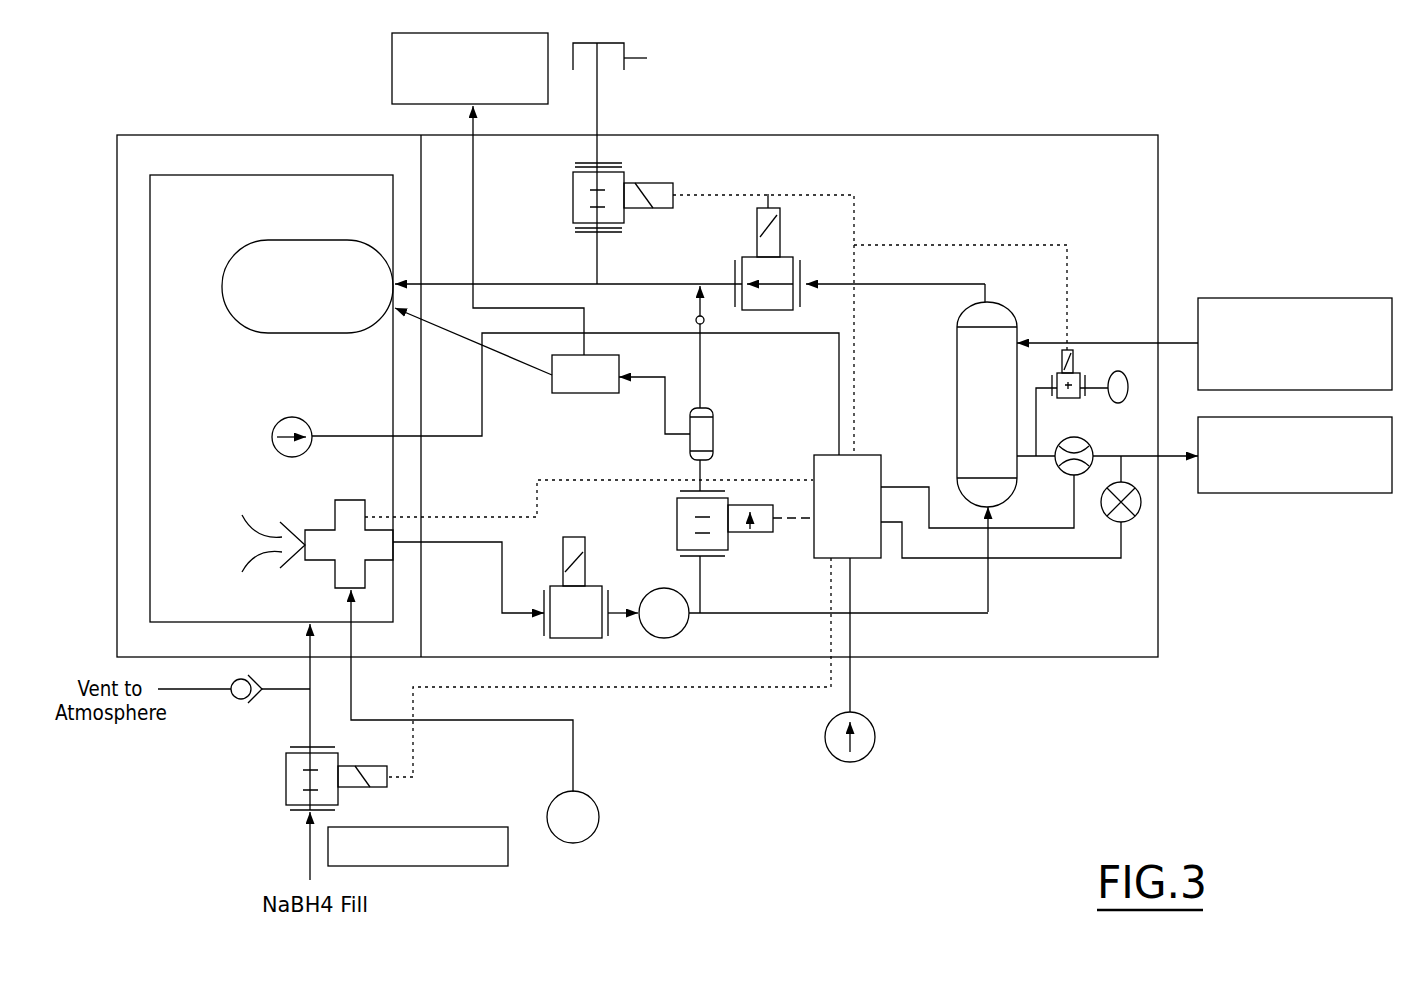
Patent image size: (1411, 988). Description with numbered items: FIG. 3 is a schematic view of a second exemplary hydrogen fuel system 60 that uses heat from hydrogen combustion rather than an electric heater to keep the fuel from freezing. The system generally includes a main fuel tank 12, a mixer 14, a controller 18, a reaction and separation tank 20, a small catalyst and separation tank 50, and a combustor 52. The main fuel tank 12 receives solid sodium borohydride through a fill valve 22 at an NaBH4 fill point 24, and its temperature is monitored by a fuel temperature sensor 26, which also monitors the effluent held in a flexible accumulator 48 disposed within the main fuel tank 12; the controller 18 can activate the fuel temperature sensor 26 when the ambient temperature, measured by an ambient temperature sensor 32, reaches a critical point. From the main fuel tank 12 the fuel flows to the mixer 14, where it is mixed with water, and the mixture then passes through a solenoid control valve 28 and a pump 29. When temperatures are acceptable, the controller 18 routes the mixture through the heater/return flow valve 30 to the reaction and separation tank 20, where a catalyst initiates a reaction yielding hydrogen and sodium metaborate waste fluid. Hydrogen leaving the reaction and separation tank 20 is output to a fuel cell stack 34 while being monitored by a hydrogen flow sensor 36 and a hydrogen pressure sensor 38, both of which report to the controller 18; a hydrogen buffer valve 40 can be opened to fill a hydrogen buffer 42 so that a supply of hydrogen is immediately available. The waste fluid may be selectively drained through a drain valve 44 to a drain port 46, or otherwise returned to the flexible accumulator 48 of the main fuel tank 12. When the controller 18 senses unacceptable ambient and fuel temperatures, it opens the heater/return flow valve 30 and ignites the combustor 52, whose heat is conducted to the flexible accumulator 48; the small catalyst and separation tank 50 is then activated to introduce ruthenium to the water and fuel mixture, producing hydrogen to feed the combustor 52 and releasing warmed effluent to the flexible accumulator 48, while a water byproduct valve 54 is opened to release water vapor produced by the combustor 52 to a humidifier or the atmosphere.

The main fuel tank 12 is at (210, 593).
The mixer 14 is at (333, 513).
The controller 18 is at (881, 456).
The reaction and separation tank 20 is at (957, 375).
The fill valve 22 is at (428, 866).
The NaBH4 fill point 24 is at (284, 775).
The fuel temperature sensor 26 is at (287, 417).
The solenoid control valve 28 is at (594, 585).
The pump 29 is at (659, 590).
The heater/return flow valve 30 is at (728, 500).
The ambient temperature sensor 32 is at (875, 727).
The fuel cell stack 34 is at (1276, 494).
The hydrogen flow sensor 36 is at (1060, 469).
The hydrogen pressure sensor 38 is at (1130, 526).
The hydrogen buffer valve 40 is at (1078, 373).
The hydrogen buffer 42 is at (793, 257).
The drain valve 44 is at (573, 195).
The drain port 46 is at (630, 163).
The flexible accumulator 48 is at (330, 303).
The small catalyst and separation tank 50 is at (713, 428).
The combustor 52 is at (592, 393).
The water byproduct valve 54 is at (392, 62).
The hydrogen fuel system 60 is at (850, 66).